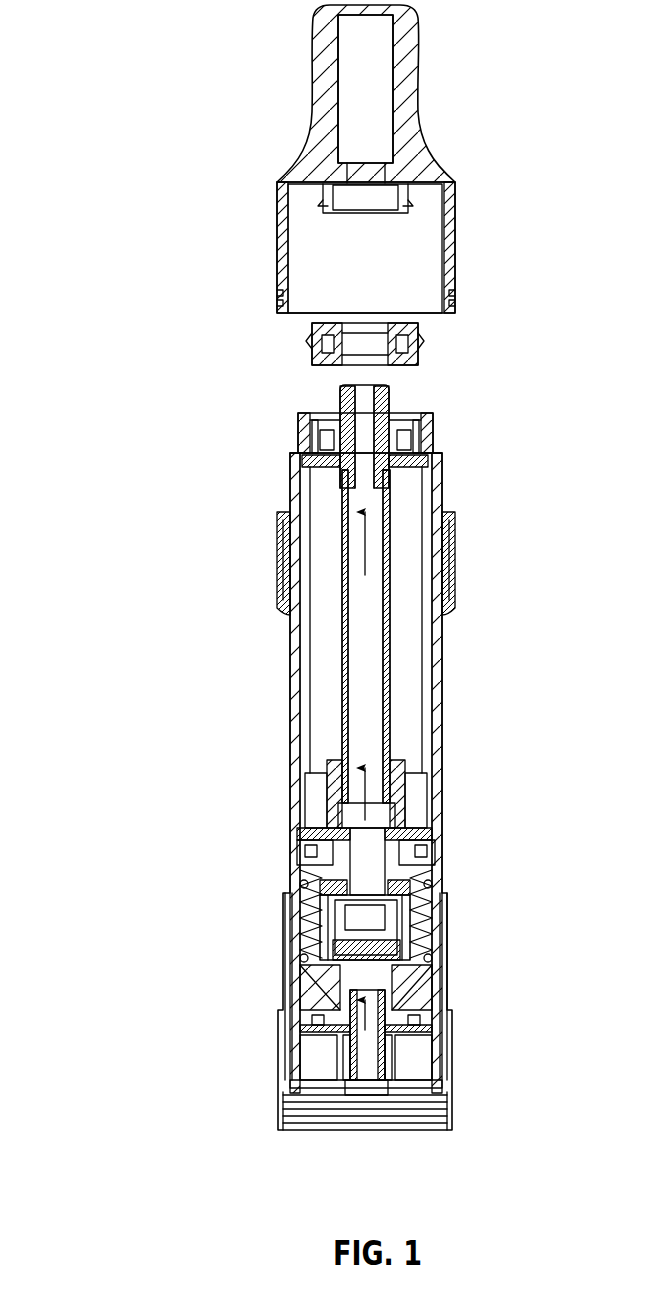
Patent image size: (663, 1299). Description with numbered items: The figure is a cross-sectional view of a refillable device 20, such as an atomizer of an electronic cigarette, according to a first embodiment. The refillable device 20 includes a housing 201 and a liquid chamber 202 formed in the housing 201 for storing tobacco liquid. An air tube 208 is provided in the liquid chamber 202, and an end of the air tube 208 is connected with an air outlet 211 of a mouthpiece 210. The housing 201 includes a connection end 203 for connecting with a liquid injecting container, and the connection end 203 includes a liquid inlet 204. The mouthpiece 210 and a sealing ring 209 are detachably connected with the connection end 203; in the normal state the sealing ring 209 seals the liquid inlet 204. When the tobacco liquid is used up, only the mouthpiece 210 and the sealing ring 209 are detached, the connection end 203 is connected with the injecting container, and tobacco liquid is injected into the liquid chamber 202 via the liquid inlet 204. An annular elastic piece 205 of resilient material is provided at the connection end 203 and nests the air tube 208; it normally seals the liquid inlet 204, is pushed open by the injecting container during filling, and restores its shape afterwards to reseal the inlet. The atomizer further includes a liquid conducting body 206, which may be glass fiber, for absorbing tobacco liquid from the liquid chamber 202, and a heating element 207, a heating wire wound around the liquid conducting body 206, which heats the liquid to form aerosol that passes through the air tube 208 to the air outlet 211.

The refillable device 20 is at (212, 262).
The housing 201 is at (290, 695).
The liquid chamber 202 is at (411, 663).
The connection end 203 is at (415, 447).
The liquid inlet 204 is at (405, 410).
The elastic piece 205 is at (298, 452).
The liquid conducting body 206 is at (312, 934).
The heating element 207 is at (410, 900).
The air tube 208 is at (390, 502).
The sealing ring 209 is at (418, 343).
The mouthpiece 210 is at (455, 200).
The air outlet 211 is at (375, 97).